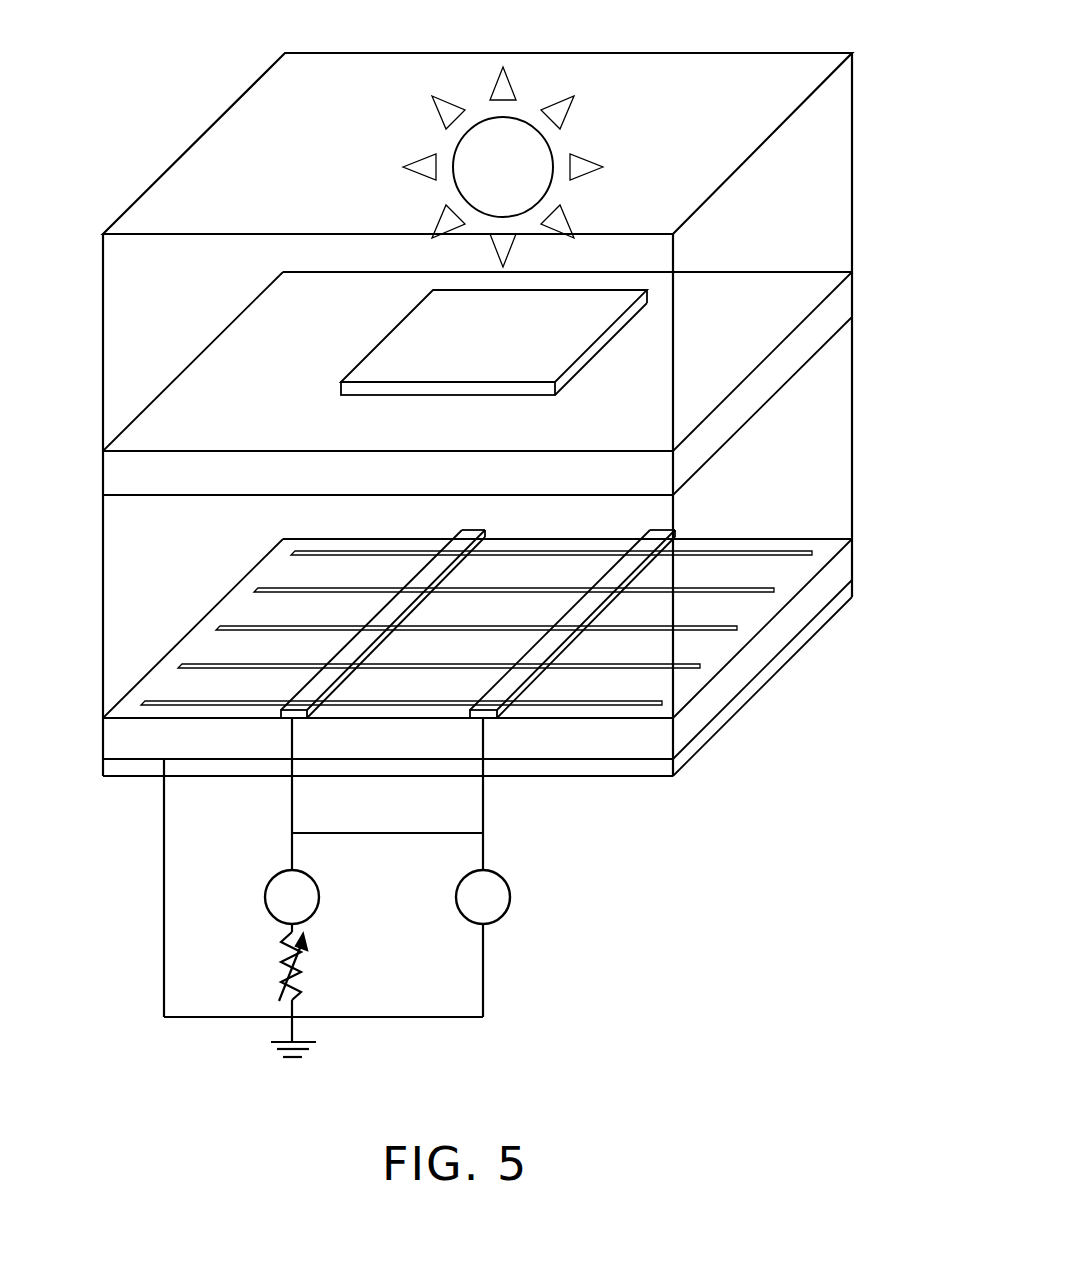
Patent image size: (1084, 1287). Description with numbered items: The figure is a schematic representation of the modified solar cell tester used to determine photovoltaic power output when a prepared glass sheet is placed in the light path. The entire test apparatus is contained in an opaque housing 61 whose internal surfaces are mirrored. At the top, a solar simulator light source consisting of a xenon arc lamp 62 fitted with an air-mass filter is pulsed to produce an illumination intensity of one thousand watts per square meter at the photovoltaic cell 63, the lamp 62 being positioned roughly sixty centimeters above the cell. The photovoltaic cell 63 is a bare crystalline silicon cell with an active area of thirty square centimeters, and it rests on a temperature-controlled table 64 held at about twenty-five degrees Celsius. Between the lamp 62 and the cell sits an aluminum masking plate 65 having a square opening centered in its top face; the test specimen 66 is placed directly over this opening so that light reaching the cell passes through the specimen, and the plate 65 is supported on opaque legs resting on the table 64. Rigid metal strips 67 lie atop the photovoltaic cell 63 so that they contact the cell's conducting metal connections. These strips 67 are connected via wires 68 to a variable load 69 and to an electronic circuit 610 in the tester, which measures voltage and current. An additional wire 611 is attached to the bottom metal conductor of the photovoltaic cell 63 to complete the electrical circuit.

The opaque housing 61 is at (748, 70).
The xenon arc lamp 62 is at (565, 100).
The photovoltaic cell 63 is at (220, 615).
The temperature-controlled table 64 is at (730, 685).
The aluminum masking plate 65 is at (207, 375).
The test specimen 66 is at (428, 320).
The rigid metal strips 67 is at (652, 532).
The wires 68 is at (483, 812).
The variable load 69 is at (287, 970).
The electronic circuit 610 is at (268, 910).
The additional wire 611 is at (164, 830).